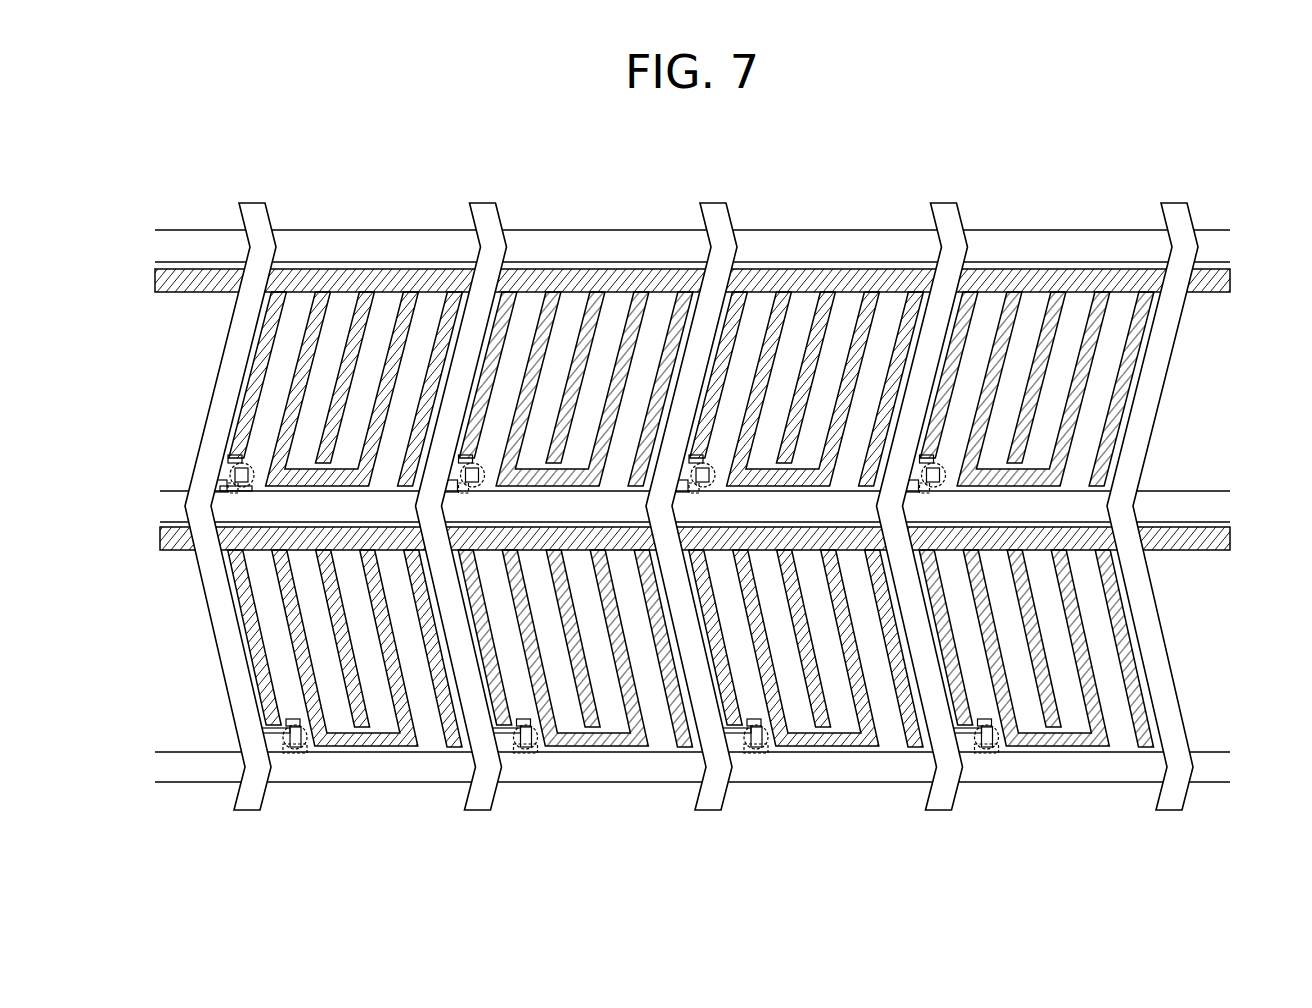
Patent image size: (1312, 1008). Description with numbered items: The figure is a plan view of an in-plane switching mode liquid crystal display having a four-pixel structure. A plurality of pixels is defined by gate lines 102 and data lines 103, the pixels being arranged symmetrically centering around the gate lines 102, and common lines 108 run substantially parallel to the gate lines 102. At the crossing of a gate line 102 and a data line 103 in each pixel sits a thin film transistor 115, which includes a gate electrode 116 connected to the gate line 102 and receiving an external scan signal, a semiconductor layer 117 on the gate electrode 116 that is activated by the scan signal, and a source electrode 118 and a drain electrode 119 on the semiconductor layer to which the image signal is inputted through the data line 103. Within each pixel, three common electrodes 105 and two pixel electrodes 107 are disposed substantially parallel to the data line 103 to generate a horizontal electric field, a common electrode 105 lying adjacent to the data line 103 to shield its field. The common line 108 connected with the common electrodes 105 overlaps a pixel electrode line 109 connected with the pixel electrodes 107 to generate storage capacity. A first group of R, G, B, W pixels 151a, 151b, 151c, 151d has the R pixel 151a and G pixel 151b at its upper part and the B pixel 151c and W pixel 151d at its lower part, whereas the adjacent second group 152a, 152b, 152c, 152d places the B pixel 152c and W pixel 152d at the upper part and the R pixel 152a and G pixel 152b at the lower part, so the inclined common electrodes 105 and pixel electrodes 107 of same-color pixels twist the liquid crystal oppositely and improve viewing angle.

The gate line 102 is at (1222, 247).
The data line 103 is at (257, 205).
The common electrode 105 is at (258, 373).
The pixel electrode 107 is at (305, 327).
The common line 108 is at (297, 267).
The pixel electrode line 109 is at (371, 268).
The thin film transistor 115 is at (208, 490).
The gate electrode 116 is at (214, 485).
The semiconductor layer 117 is at (230, 457).
The source electrode 118 is at (222, 472).
The drain electrode 119 is at (240, 487).
The R pixel 151a is at (289, 381).
The G pixel 151b is at (656, 314).
The B pixel 151c is at (662, 733).
The W pixel 151d is at (432, 733).
The R pixel 152a is at (891, 733).
The G pixel 152b is at (1122, 733).
The B pixel 152c is at (1115, 314).
The W pixel 152d is at (886, 314).